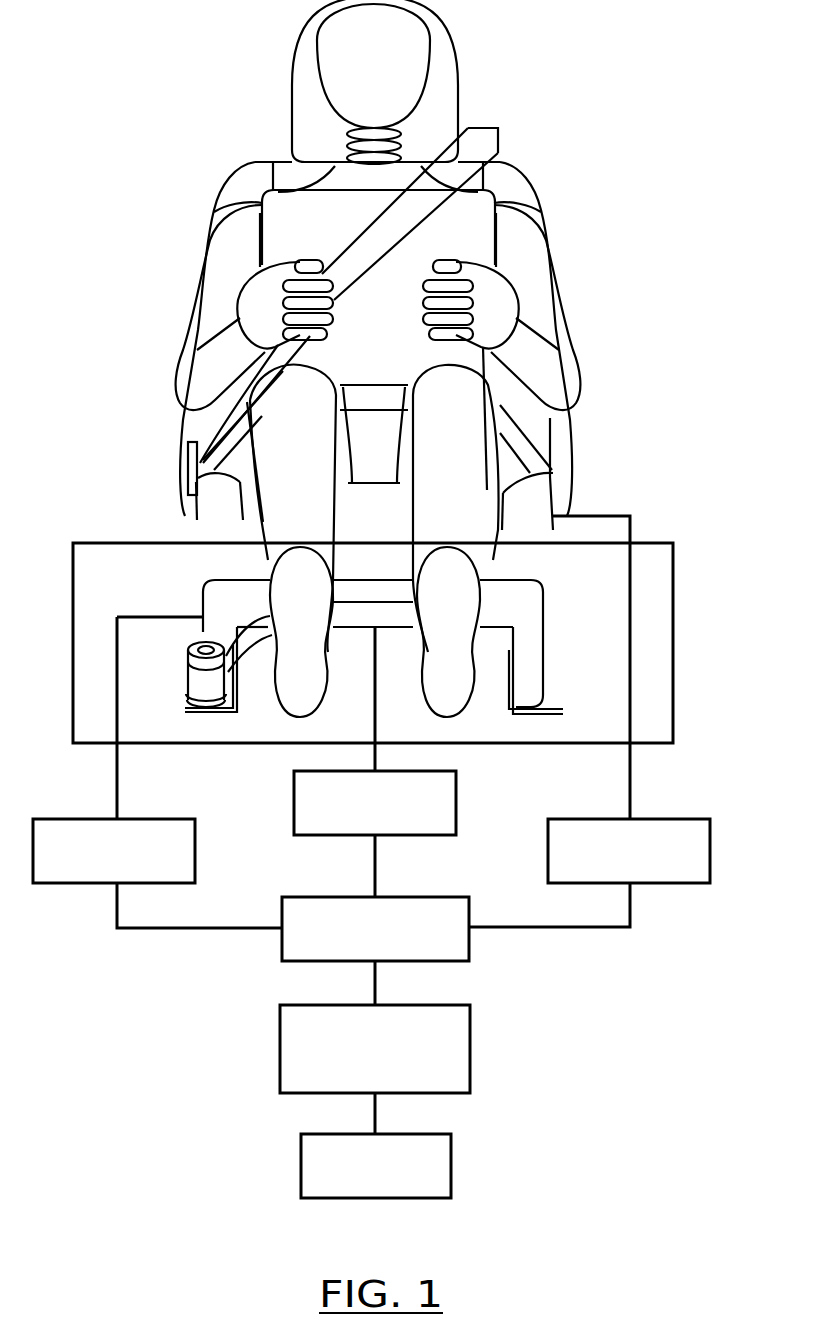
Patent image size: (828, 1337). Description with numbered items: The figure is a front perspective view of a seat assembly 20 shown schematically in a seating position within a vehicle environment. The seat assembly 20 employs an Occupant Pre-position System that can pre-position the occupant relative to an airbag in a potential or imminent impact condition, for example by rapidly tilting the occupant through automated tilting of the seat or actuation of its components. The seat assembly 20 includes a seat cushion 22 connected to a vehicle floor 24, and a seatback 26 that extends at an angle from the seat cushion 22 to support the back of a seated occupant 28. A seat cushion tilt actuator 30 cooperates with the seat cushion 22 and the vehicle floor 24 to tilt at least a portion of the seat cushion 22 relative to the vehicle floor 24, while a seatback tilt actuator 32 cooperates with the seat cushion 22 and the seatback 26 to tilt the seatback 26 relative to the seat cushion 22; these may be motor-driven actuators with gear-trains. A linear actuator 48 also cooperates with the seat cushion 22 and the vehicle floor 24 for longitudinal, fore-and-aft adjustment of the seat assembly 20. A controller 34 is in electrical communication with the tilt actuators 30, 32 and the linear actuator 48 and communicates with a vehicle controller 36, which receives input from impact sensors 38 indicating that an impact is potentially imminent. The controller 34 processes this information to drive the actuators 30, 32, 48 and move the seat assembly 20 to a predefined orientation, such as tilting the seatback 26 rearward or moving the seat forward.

The seat assembly 20 is at (200, 114).
The seat cushion 22 is at (192, 517).
The vehicle floor 24 is at (128, 588).
The seatback 26 is at (217, 207).
The seated occupant 28 is at (463, 208).
The seat cushion tilt actuator 30 is at (389, 829).
The seatback tilt actuator 32 is at (643, 877).
The controller 34 is at (389, 955).
The vehicle controller 36 is at (389, 1086).
The impact sensors 38 is at (389, 1192).
The linear actuator 48 is at (128, 877).